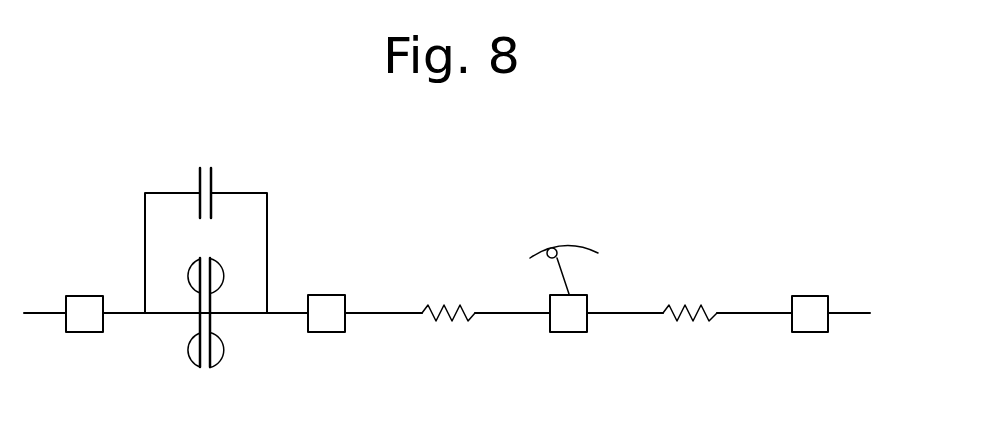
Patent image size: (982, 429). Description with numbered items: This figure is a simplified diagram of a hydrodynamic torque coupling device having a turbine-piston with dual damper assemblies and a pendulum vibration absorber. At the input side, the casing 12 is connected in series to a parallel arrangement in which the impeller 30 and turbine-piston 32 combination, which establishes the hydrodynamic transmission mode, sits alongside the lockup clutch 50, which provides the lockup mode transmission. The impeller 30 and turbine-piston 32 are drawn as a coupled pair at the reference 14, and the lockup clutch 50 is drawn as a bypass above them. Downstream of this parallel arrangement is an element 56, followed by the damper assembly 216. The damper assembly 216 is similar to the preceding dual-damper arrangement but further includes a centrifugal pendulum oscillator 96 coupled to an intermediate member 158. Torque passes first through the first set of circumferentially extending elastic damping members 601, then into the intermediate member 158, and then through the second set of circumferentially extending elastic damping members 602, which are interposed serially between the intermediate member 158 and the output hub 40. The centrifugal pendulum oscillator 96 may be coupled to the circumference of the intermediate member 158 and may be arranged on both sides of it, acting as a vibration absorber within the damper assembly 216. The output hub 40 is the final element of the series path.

The casing 12 is at (84, 304).
The transducer assembly 14 is at (178, 245).
The lockup clutch 50 is at (222, 178).
The impeller 30 is at (190, 350).
The turbine-piston 32 is at (221, 350).
The matching network 56 is at (330, 303).
The first set of circumferentially extending elastic damping members 601 is at (443, 322).
The intermediate member 158 is at (567, 323).
The centrifugal pendulum oscillator 96 is at (581, 248).
The damper assembly 216 is at (630, 290).
The second set of circumferentially extending elastic damping members 602 is at (683, 324).
The output hub 40 is at (813, 303).